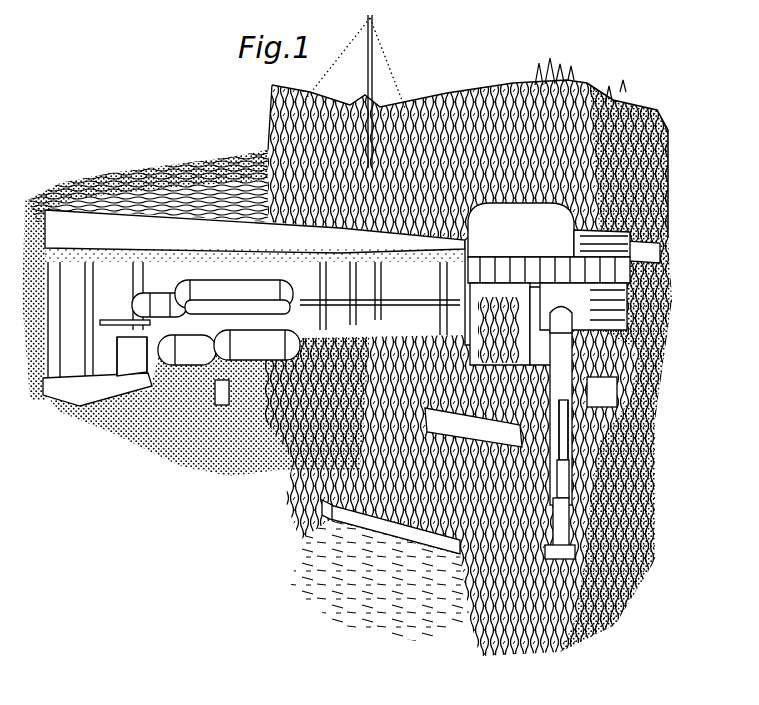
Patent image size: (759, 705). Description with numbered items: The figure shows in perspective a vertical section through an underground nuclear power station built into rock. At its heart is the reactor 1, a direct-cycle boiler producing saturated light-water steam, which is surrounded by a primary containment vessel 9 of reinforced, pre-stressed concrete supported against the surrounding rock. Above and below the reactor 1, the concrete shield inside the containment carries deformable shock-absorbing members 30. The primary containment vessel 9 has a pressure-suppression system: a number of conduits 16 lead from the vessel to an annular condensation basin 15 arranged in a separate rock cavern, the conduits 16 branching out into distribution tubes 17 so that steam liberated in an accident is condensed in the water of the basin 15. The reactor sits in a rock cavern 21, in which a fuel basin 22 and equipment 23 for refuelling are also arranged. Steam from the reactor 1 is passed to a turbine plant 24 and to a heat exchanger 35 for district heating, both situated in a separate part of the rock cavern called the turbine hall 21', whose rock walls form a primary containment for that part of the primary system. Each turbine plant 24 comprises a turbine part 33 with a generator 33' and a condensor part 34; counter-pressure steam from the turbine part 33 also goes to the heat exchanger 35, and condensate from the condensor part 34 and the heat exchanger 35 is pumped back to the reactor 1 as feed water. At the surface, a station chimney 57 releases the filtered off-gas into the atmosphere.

The reactor 1 is at (573, 433).
The primary containment vessel 9 is at (587, 493).
The condensation basin 15 is at (514, 436).
The conduits 16 is at (540, 390).
The distribution tubes 17 is at (473, 427).
The rock cavern 21 is at (631, 445).
The turbine hall 21' is at (352, 186).
The fuel basin 22 is at (540, 289).
The refuelling equipment 23 is at (563, 245).
The turbine plant 24 is at (200, 279).
The shock-absorbing members 30 is at (577, 527).
The turbine part 33 is at (237, 271).
The generator 33' is at (315, 270).
The condensor part 34 is at (180, 363).
The heat exchanger 35 is at (228, 405).
The station chimney 57 is at (380, 50).